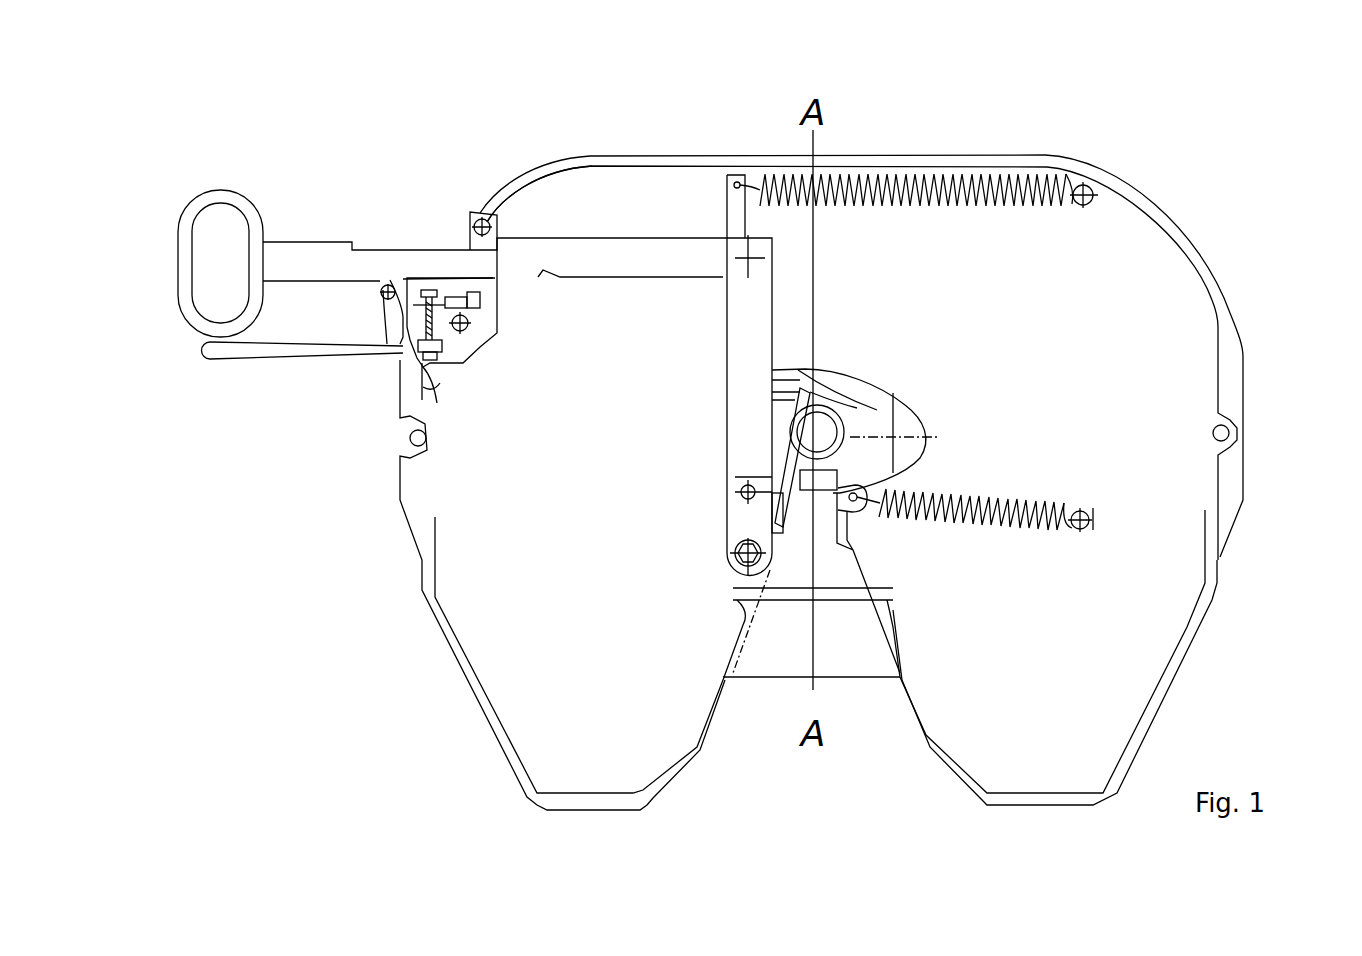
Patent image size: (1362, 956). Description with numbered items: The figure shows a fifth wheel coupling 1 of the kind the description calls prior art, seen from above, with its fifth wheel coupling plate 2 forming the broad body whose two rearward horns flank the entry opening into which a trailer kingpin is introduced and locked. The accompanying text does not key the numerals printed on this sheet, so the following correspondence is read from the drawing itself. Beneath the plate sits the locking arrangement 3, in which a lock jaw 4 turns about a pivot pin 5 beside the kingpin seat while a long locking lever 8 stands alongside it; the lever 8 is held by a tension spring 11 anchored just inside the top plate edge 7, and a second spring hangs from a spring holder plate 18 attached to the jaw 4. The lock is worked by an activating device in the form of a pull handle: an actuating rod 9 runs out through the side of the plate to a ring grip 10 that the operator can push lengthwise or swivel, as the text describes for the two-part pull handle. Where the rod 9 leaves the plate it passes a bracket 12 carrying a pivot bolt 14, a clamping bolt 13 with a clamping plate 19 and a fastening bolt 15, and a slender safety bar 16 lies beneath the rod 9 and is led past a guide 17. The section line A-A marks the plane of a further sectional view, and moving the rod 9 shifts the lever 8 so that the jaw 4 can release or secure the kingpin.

The fifth wheel coupling plate 1 is at (872, 142).
The housing 2 is at (1232, 317).
The locking mechanism 3 is at (850, 358).
The locking jaw 4 is at (877, 423).
The pivot pin of locking jaw 5 is at (822, 440).
The top plate edge 7 is at (648, 220).
The locking lever 8 is at (743, 485).
The actuating rod 9 is at (615, 263).
The handle ring 10 is at (242, 200).
The tension spring 11 is at (933, 205).
The bracket 12 is at (377, 380).
The clamping bolt 13 is at (440, 300).
The pivot bolt 14 is at (383, 294).
The fastening bolt 15 is at (447, 337).
The locking bar 16 is at (220, 352).
The guide 17 is at (438, 395).
The spring holder plate 18 is at (852, 553).
The clamping plate 19 is at (457, 298).